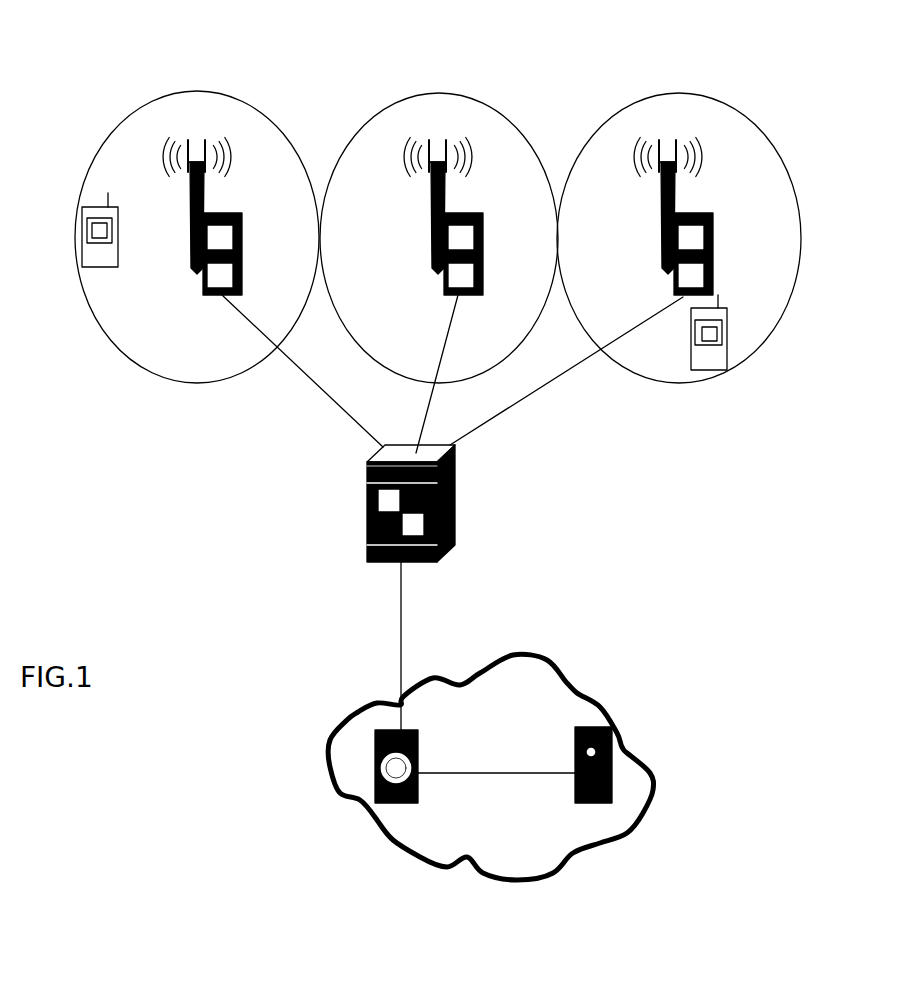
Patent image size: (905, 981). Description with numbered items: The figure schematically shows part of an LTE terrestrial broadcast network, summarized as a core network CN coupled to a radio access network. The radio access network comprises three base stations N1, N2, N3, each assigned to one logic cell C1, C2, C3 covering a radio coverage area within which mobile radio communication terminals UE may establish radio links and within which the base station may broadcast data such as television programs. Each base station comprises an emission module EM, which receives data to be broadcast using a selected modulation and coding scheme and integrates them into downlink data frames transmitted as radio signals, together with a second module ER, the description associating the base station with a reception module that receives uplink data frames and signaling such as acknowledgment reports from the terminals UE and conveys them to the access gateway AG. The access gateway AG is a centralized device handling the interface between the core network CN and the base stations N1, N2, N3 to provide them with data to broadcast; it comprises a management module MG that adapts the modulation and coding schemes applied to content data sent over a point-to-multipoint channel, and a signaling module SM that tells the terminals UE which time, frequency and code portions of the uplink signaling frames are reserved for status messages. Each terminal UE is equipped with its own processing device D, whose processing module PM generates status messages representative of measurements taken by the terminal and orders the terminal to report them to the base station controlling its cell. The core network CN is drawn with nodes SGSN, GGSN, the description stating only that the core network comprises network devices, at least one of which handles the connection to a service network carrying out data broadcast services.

The base station N1 is at (194, 148).
The base station N2 is at (434, 148).
The base station N3 is at (665, 148).
The cell C1 is at (222, 94).
The cell C2 is at (463, 94).
The cell C3 is at (705, 94).
The emission module EM is at (243, 237).
The reporting module ER is at (243, 281).
The mobile radio communication terminal UE is at (95, 203).
The processing device D is at (88, 228).
The processing module PM is at (100, 239).
The management module MG is at (406, 515).
The access gateway AG is at (457, 480).
The signaling module SM is at (448, 546).
The core network CN is at (512, 832).
The serving GPRS support node SGSN is at (372, 793).
The gateway GPRS support node GGSN is at (598, 725).